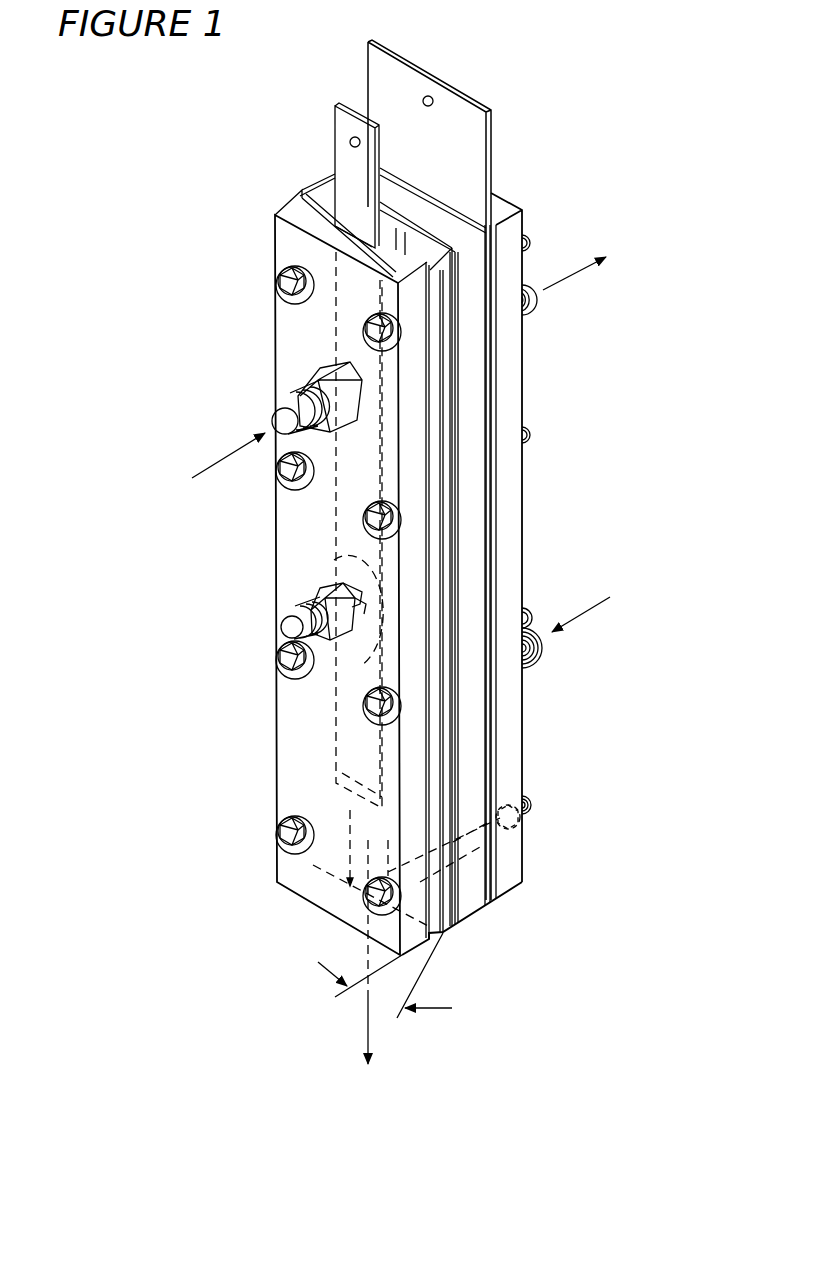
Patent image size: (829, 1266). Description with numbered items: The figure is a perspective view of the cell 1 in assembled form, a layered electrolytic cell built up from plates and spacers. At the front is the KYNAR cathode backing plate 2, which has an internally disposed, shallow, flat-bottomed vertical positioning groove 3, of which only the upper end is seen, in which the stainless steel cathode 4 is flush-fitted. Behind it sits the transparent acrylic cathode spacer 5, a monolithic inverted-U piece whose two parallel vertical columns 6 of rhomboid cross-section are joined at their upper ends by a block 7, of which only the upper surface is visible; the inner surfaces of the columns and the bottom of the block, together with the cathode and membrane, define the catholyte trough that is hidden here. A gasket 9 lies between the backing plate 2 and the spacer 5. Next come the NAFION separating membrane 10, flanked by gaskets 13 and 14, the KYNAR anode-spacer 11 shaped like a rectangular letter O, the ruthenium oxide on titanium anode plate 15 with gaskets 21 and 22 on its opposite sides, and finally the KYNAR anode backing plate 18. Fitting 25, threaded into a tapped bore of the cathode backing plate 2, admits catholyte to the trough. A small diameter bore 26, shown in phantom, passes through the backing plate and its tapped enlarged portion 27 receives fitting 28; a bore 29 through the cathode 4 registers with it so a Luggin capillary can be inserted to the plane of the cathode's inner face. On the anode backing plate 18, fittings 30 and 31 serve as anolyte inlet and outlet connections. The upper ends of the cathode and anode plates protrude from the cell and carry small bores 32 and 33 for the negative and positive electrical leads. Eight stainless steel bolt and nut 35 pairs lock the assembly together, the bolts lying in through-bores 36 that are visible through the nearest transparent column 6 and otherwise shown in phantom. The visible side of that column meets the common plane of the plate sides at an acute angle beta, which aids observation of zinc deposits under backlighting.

The cell 1 is at (572, 520).
The cathode backing plate 2 is at (305, 512).
The vertical positioning groove 3 is at (358, 234).
The cathode 4 is at (340, 152).
The cathode spacer 5 is at (300, 176).
The columns 6 is at (445, 576).
The block 7 is at (396, 236).
The gasket 9 is at (300, 199).
The separating membrane 10 is at (458, 741).
The anode-spacer 11 is at (475, 769).
The gasket 13 is at (455, 930).
The gasket 14 is at (468, 918).
The anode plate 15 is at (492, 131).
The anode backing plate 18 is at (510, 508).
The gasket 21 is at (493, 900).
The gasket 22 is at (518, 884).
The fitting 25 is at (284, 405).
The small diameter bore 26 is at (342, 584).
The enlarged portion 27 is at (358, 635).
The fitting 28 is at (298, 626).
The bore 29 is at (332, 560).
The fitting 30 is at (545, 660).
The fitting 31 is at (543, 313).
The small bore 32 is at (355, 136).
The small bore 33 is at (430, 96).
The nut 35 is at (528, 821).
The through-bores 36 is at (480, 847).